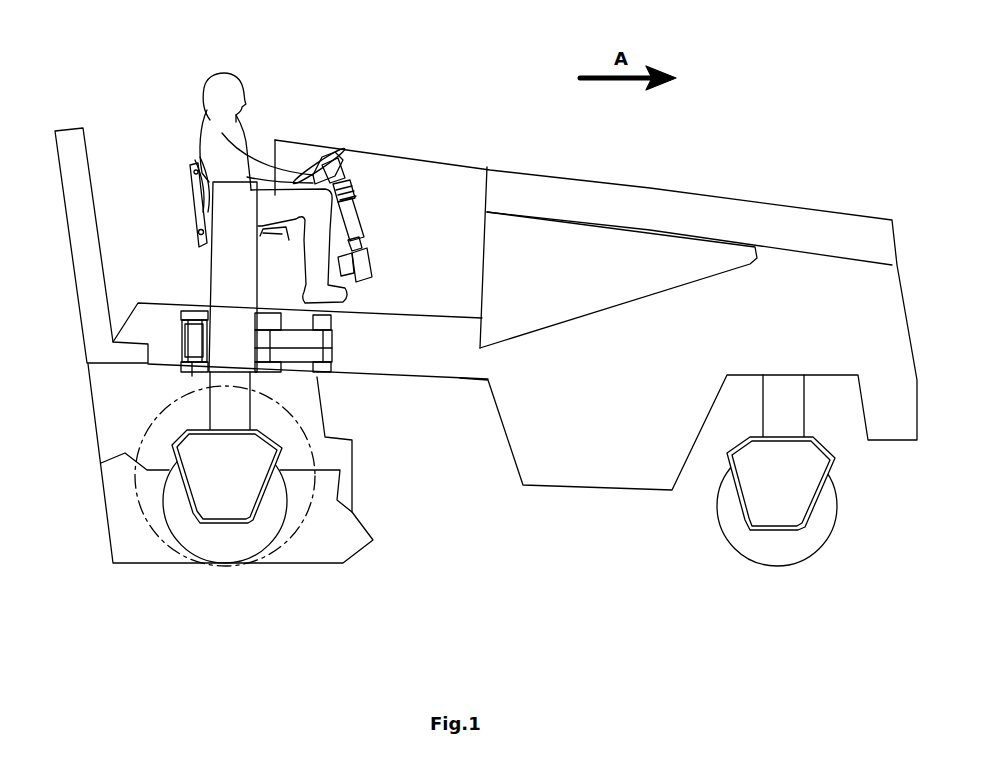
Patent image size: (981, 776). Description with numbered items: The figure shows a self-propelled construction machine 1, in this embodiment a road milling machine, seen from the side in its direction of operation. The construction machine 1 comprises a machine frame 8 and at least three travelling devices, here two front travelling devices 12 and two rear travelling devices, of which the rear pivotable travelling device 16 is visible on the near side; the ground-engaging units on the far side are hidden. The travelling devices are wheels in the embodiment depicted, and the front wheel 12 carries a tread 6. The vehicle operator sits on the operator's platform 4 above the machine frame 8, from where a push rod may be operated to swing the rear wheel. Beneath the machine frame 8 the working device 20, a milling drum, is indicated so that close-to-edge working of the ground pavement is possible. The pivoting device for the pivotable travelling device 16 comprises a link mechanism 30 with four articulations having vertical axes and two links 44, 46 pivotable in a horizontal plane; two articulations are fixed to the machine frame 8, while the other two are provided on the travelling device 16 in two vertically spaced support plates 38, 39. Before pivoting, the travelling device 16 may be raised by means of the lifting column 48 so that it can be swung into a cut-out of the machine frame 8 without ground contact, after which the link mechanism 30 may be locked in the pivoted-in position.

The self-propelled construction machine 1 is at (757, 120).
The operator's platform 4 is at (160, 100).
The link mechanism 30 is at (143, 218).
The machine frame 8 is at (140, 313).
The support plate 38 is at (181, 310).
The link 44 is at (182, 338).
The support plate 39 is at (181, 360).
The link 46 is at (300, 345).
The lifting column 48 is at (227, 407).
The pivotable travelling device 16 is at (166, 513).
The working device 20 is at (295, 537).
The front wheel tread 6 is at (773, 500).
The travelling device 12 is at (792, 547).